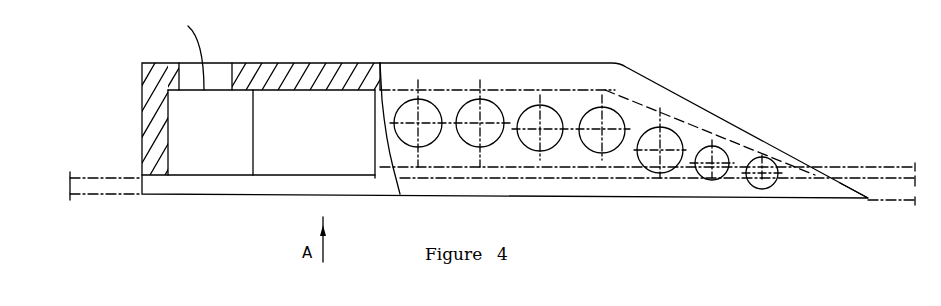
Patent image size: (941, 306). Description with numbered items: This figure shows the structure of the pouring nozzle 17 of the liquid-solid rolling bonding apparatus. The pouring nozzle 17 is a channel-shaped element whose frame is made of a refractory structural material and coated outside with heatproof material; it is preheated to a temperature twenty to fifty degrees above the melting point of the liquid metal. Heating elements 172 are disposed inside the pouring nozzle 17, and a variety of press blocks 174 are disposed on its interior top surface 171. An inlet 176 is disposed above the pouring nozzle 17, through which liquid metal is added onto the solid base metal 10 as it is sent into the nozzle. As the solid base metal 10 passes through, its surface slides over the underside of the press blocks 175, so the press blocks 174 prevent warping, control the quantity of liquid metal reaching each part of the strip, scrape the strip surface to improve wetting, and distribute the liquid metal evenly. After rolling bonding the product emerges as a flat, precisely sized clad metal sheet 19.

The solid base metal 10 is at (125, 177).
The pouring nozzle 17 is at (728, 95).
The clad metal sheet 19 is at (873, 183).
The interior top surface 171 is at (388, 45).
The heating elements 172 is at (428, 117).
The press blocks 174 is at (280, 161).
The underside of the press blocks 175 is at (180, 178).
The inlet 176 is at (214, 75).